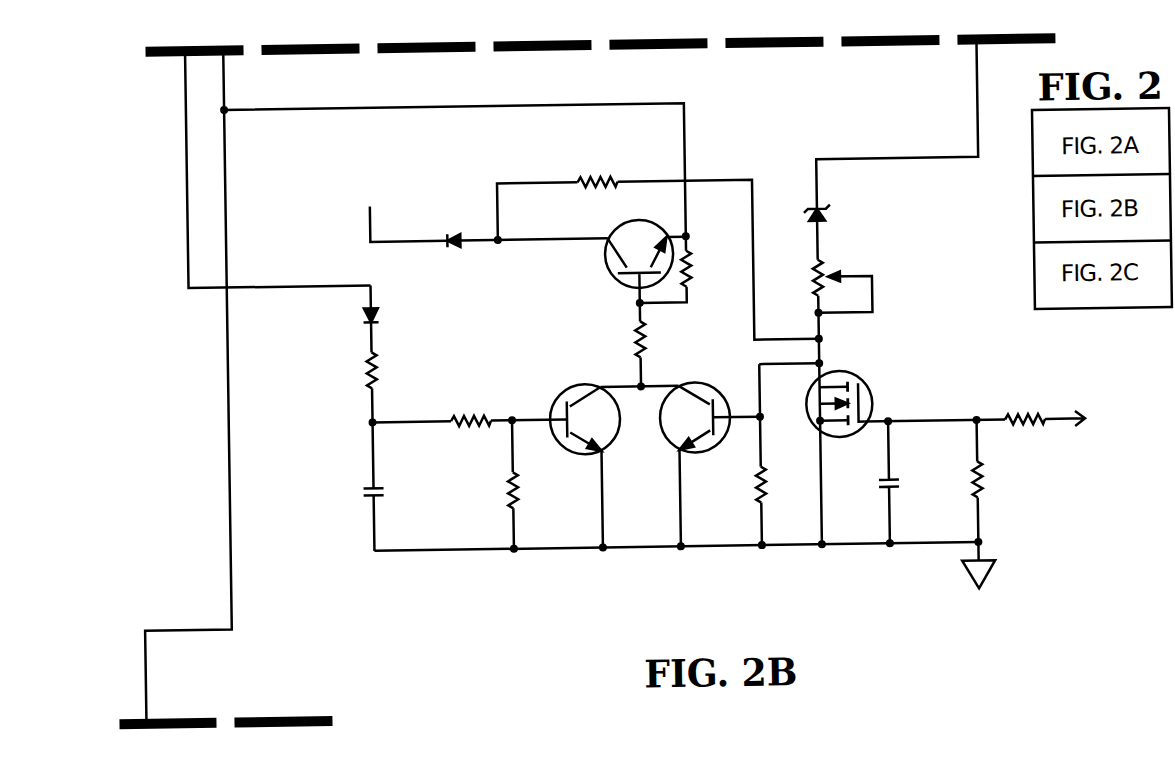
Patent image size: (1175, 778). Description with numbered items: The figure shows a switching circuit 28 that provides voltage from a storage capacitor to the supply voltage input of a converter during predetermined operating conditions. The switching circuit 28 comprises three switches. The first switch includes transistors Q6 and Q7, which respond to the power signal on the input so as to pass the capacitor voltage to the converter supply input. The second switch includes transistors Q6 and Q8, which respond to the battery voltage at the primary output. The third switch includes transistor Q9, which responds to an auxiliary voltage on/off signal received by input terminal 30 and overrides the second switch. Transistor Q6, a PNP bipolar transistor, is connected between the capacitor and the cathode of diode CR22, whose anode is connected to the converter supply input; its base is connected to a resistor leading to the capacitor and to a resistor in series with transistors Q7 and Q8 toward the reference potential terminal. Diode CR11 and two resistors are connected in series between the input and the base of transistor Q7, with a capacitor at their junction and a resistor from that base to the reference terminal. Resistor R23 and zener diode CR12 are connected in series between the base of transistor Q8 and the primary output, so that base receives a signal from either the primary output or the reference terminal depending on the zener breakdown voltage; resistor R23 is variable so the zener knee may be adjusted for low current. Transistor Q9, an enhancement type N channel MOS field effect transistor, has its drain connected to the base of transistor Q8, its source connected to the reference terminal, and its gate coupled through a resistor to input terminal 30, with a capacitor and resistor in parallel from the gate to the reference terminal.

The switching circuit 28 is at (588, 381).
The input terminal 30 is at (1072, 437).
The transistor Q6 is at (635, 256).
The transistor Q7 is at (574, 412).
The transistor Q8 is at (704, 410).
The transistor Q9 is at (853, 401).
The diode CR11 is at (402, 317).
The zener diode CR12 is at (849, 201).
The diode CR22 is at (450, 228).
The resistor R23 is at (821, 284).